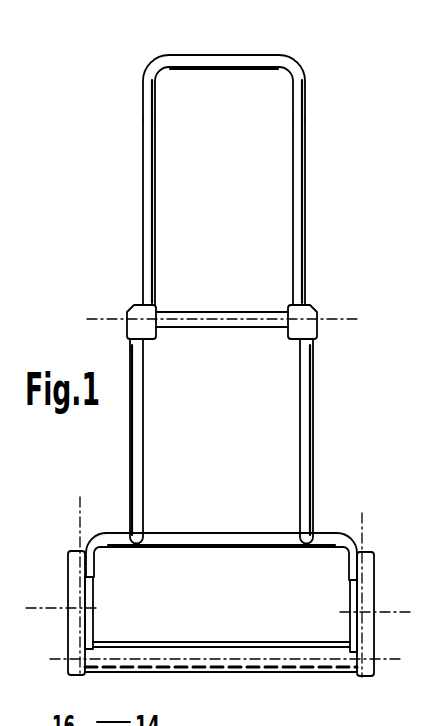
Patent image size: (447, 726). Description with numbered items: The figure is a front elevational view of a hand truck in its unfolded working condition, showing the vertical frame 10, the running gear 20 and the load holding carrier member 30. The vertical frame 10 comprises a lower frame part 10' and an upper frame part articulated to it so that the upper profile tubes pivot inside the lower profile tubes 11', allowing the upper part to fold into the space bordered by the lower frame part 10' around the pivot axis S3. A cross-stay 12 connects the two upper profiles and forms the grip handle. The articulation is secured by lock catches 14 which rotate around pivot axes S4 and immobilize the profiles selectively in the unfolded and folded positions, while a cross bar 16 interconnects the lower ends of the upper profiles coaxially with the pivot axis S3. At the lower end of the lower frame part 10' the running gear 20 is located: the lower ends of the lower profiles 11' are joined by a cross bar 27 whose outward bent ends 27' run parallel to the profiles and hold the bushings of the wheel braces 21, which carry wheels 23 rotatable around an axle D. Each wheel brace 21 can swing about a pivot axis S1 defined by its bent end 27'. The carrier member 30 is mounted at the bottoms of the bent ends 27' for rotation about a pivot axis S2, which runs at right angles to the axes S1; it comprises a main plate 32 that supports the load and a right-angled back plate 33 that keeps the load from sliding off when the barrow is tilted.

The vertical frame 10 is at (231, 299).
The lower frame part 10' is at (257, 441).
The cross-stay 12 is at (228, 68).
The lower profile tubes 11' is at (221, 441).
The lock catches 14 is at (135, 308).
The cross bar 16 is at (233, 312).
The running gear 20 is at (222, 593).
The cross bar 27 is at (220, 531).
The bent ends 27' is at (217, 561).
The wheels 23 is at (68, 575).
The wheel braces 21 is at (93, 623).
The carrier member 30 is at (230, 650).
The back plate 33 is at (268, 648).
The main plate 32 is at (208, 673).
The pivot axis S1 is at (80, 497).
The pivot axis S2 is at (54, 659).
The pivot axis S3 is at (93, 317).
The pivot axes S4 is at (128, 334).
The axle D is at (26, 608).